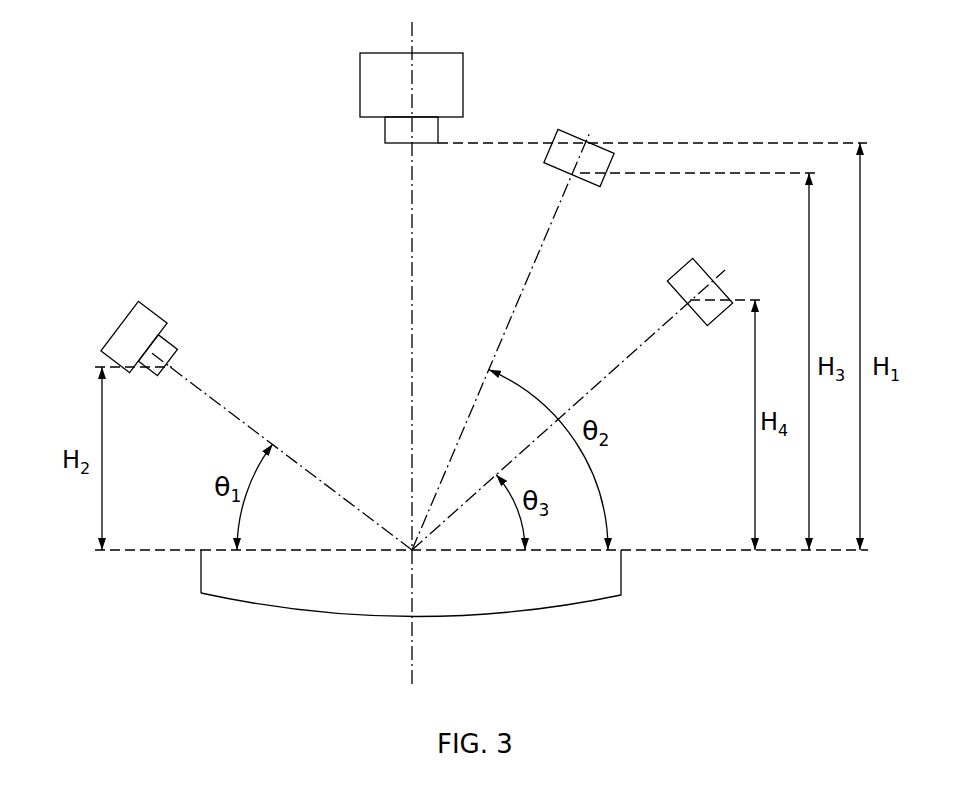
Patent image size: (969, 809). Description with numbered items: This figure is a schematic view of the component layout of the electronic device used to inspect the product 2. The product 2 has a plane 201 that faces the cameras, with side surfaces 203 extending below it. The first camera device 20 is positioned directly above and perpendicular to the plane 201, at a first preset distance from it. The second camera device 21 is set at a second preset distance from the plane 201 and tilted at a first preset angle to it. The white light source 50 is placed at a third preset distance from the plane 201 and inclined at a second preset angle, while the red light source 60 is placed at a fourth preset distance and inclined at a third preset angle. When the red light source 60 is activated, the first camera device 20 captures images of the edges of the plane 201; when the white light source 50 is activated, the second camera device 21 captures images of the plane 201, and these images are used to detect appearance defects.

The product 2 is at (505, 594).
The first camera device 20 is at (448, 63).
The second camera device 21 is at (130, 333).
The white light source 50 is at (565, 128).
The red light source 60 is at (697, 256).
The plane 201 is at (300, 553).
The side surface 203 is at (199, 553).